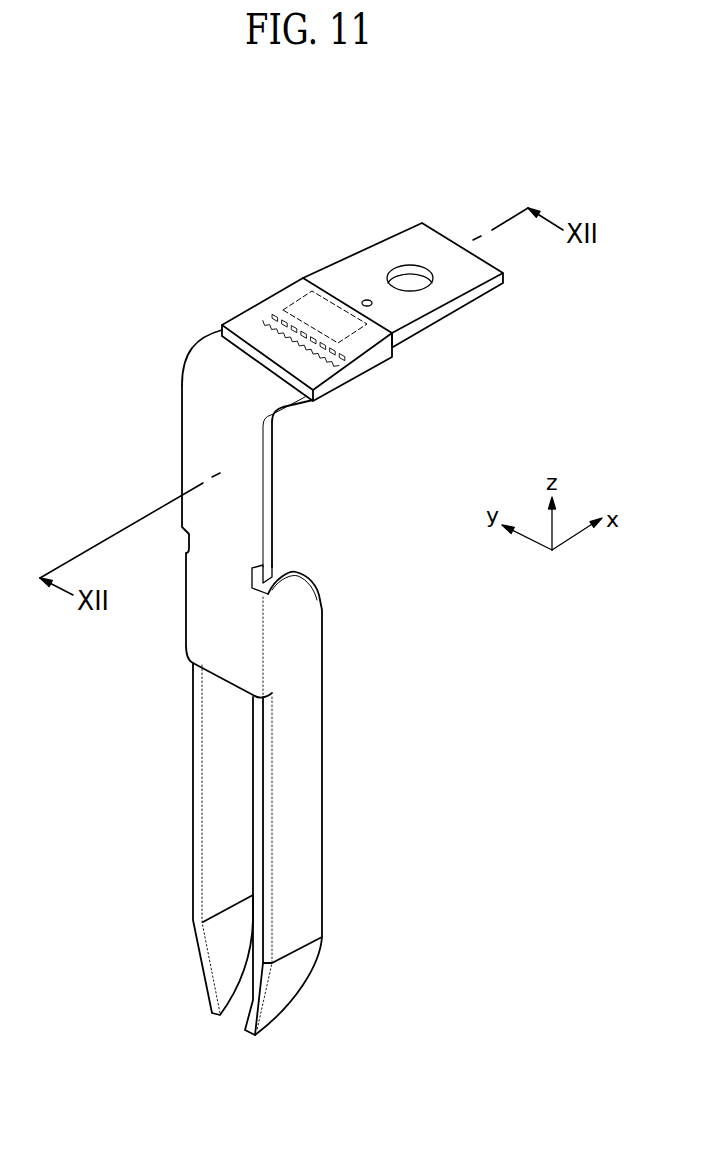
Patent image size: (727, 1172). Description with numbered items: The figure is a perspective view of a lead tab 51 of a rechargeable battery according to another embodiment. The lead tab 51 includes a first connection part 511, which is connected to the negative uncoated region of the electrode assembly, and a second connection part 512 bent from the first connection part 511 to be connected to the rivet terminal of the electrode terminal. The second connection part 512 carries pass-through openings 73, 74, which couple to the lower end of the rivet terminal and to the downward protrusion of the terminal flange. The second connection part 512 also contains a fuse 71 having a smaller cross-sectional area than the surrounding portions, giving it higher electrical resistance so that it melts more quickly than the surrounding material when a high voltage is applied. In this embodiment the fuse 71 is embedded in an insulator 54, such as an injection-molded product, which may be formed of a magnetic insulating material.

The lead tab 51 is at (348, 603).
The first connection part 511 is at (302, 712).
The second connection part 512 is at (348, 593).
The insulator 54 is at (235, 327).
The fuse 71 is at (272, 316).
The pass-through opening 73 is at (413, 266).
The pass-through opening 74 is at (364, 299).